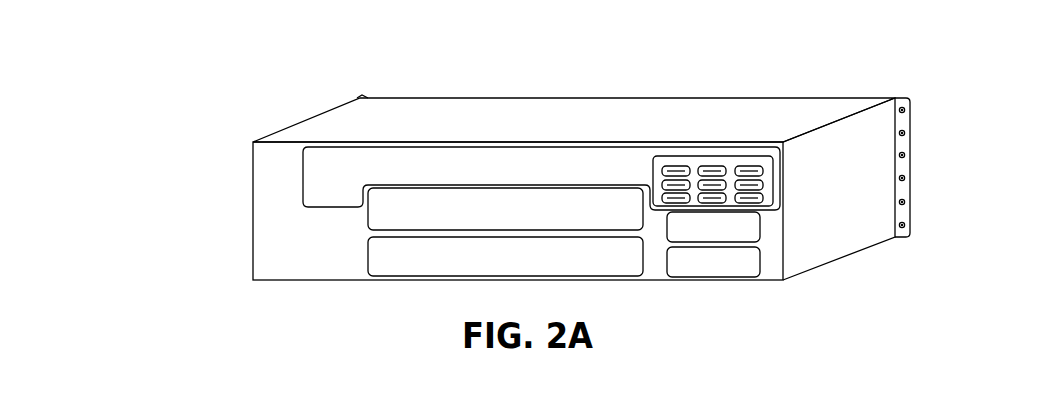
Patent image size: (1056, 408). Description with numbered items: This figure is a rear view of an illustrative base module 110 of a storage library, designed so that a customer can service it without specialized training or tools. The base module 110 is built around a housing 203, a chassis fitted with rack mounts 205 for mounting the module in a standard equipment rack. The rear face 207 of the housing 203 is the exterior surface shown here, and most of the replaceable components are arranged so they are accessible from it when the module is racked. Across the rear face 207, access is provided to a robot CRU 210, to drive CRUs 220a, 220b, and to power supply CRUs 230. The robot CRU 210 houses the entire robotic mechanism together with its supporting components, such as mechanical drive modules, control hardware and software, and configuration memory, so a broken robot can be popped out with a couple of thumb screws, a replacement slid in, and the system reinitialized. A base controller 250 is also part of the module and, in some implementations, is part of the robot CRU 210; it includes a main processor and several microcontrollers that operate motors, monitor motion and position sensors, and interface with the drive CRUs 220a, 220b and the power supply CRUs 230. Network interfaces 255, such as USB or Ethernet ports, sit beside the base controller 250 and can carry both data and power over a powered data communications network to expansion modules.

The base module 110 is at (850, 58).
The housing 203 is at (337, 108).
The rack mounts 205 is at (910, 138).
The rear face 207 is at (318, 268).
The robot CRU 210 is at (607, 176).
The drive CRU 220a is at (575, 220).
The drive CRU 220b is at (575, 263).
The power supply CRUs 230 is at (762, 258).
The base controller 250 is at (738, 158).
The network interfaces 255 is at (663, 168).